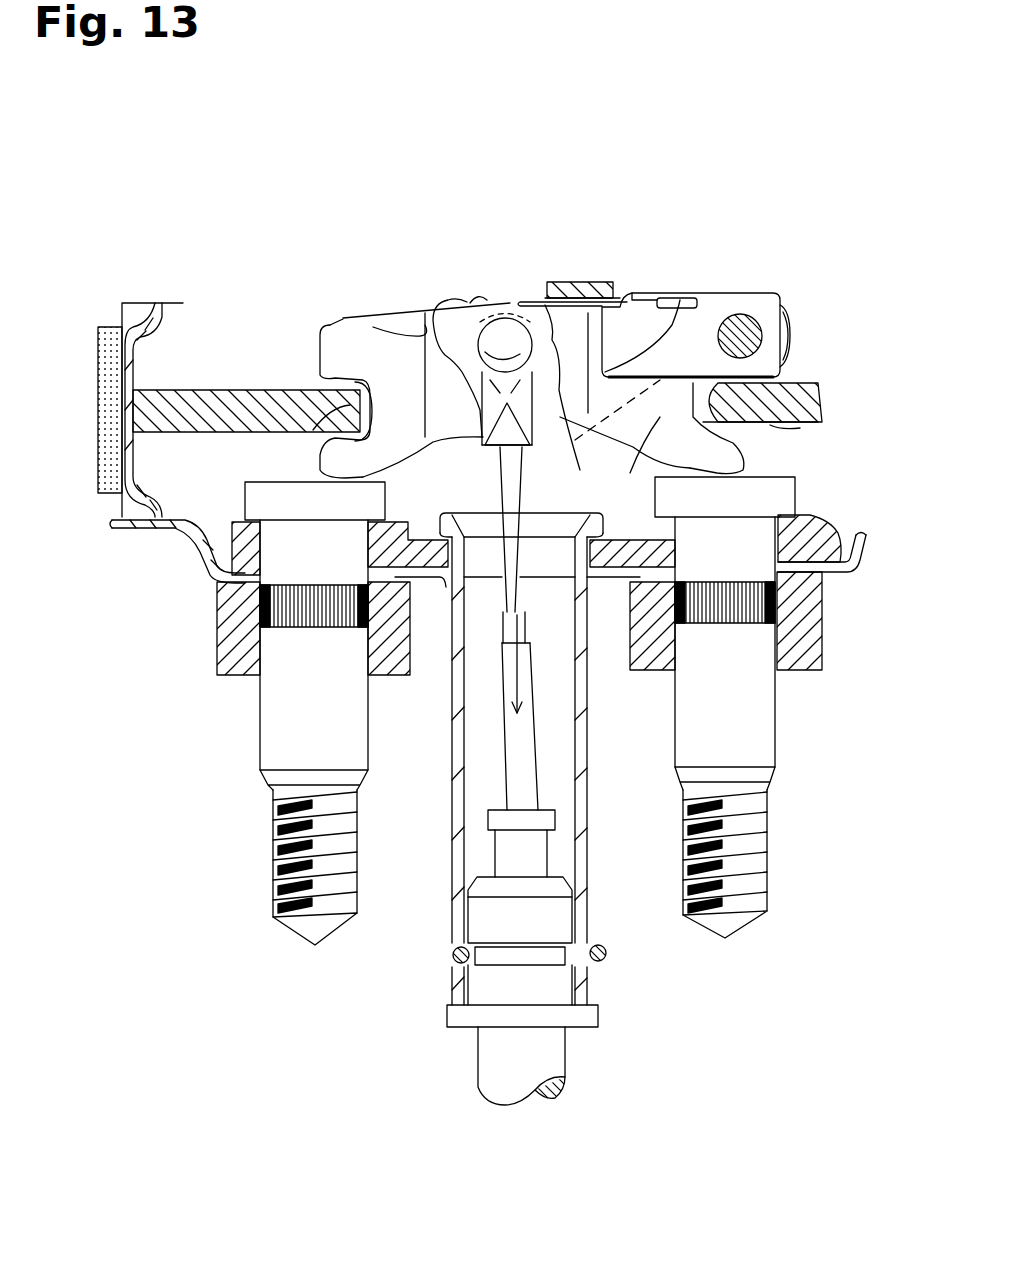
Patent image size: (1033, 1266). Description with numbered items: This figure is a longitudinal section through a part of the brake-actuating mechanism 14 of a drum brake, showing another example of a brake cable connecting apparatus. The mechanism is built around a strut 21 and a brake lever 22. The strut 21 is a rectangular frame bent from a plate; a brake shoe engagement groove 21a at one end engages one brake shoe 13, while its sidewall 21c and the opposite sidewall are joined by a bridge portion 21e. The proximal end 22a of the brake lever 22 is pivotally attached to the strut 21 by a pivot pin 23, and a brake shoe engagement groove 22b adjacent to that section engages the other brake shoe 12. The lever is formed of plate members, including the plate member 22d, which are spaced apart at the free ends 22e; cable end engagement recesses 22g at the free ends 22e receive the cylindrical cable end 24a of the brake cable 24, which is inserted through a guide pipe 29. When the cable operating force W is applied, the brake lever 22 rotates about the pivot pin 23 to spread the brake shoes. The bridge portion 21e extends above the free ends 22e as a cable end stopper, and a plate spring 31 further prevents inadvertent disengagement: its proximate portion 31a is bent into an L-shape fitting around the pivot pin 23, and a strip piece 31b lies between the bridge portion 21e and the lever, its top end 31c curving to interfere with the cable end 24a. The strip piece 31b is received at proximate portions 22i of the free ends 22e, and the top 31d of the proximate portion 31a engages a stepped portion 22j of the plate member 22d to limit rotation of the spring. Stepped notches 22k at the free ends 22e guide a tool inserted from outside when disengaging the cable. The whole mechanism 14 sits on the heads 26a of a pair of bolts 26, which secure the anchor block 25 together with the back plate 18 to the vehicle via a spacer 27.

The brake shoe 12 is at (830, 397).
The brake shoe 13 is at (133, 302).
The brake-actuating mechanism 14 is at (300, 352).
The back plate 18 is at (867, 540).
The strut 21 is at (347, 317).
The brake shoe engagement groove 21a is at (330, 410).
The sidewall 21c is at (400, 312).
The bridge portion 21e is at (568, 282).
The brake lever 22 is at (755, 457).
The proximal end 22a is at (791, 330).
The brake shoe engagement groove 22b is at (780, 425).
The plate member 22d is at (645, 455).
The free end 22e is at (460, 318).
The cable end engagement recess 22g is at (500, 312).
The proximate portion 22i is at (577, 280).
The stepped portion 22j is at (586, 312).
The stepped notch 22k is at (420, 314).
The pivot pin 23 is at (743, 313).
The brake cable 24 is at (497, 635).
The cable end 24a is at (480, 437).
The anchor block 25 is at (840, 518).
The bolt 26 is at (263, 737).
The head 26a is at (340, 514).
The spacer 27 is at (217, 637).
The guide pipe 29 is at (590, 890).
The plate spring 31 is at (773, 283).
The proximate portion 31a is at (782, 312).
The strip piece 31b is at (650, 298).
The top end 31c is at (590, 440).
The top 31d is at (678, 298).
The cable operating force W is at (510, 677).